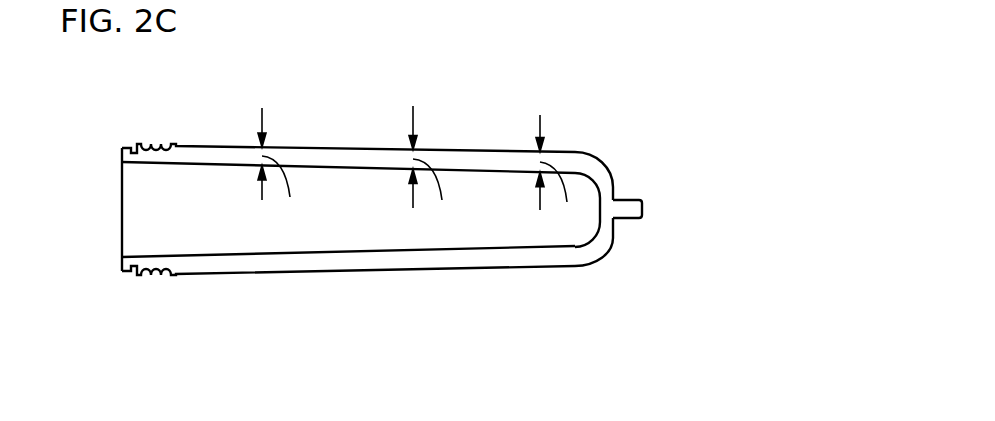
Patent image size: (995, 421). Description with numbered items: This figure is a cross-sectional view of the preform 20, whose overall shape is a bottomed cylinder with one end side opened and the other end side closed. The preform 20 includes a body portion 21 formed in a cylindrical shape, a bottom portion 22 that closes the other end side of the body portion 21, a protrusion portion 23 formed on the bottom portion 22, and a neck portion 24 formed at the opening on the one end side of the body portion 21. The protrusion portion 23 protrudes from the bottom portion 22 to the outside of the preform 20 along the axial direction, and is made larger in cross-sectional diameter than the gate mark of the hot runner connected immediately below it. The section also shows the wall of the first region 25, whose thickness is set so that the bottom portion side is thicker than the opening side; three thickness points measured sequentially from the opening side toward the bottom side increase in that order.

The preform 20 is at (615, 98).
The body portion 21 is at (348, 158).
The bottom portion 22 is at (615, 183).
The protrusion portion 23 is at (633, 220).
The neck portion 24 is at (148, 273).
The first region 25 is at (217, 146).